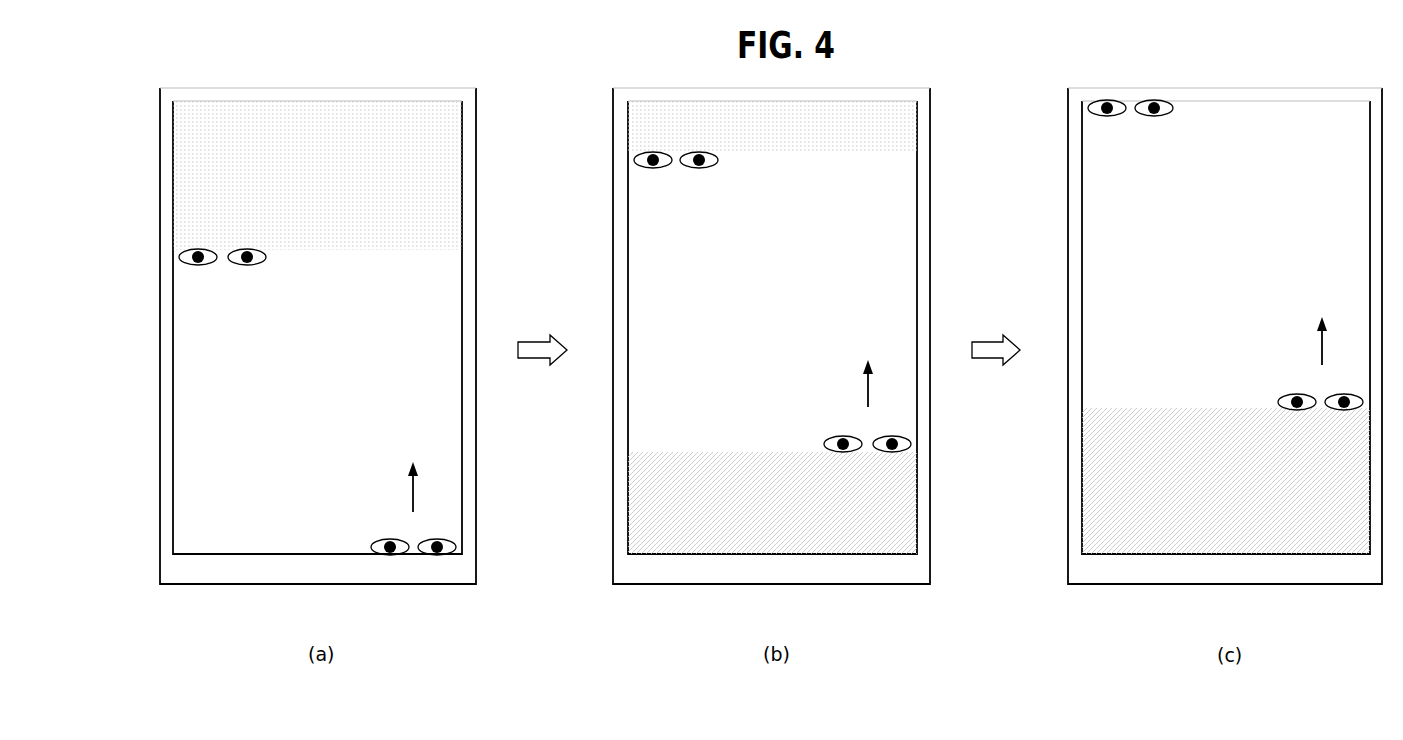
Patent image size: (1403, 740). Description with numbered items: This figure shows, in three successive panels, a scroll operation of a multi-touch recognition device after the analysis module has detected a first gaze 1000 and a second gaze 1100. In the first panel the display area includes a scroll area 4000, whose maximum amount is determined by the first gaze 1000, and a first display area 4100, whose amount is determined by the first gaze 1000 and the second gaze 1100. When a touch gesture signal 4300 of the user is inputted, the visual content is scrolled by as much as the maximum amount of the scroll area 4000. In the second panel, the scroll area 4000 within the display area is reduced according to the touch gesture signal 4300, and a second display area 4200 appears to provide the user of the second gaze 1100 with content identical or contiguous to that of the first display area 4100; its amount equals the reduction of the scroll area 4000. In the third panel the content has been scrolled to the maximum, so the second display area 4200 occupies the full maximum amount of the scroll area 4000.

The scroll area 4000 is at (166, 101).
The first display area 4100 is at (166, 250).
The second display area 4200 is at (622, 452).
The first gaze 1000 is at (192, 266).
The second gaze 1100 is at (423, 556).
The touch gesture signal 4300 is at (414, 492).